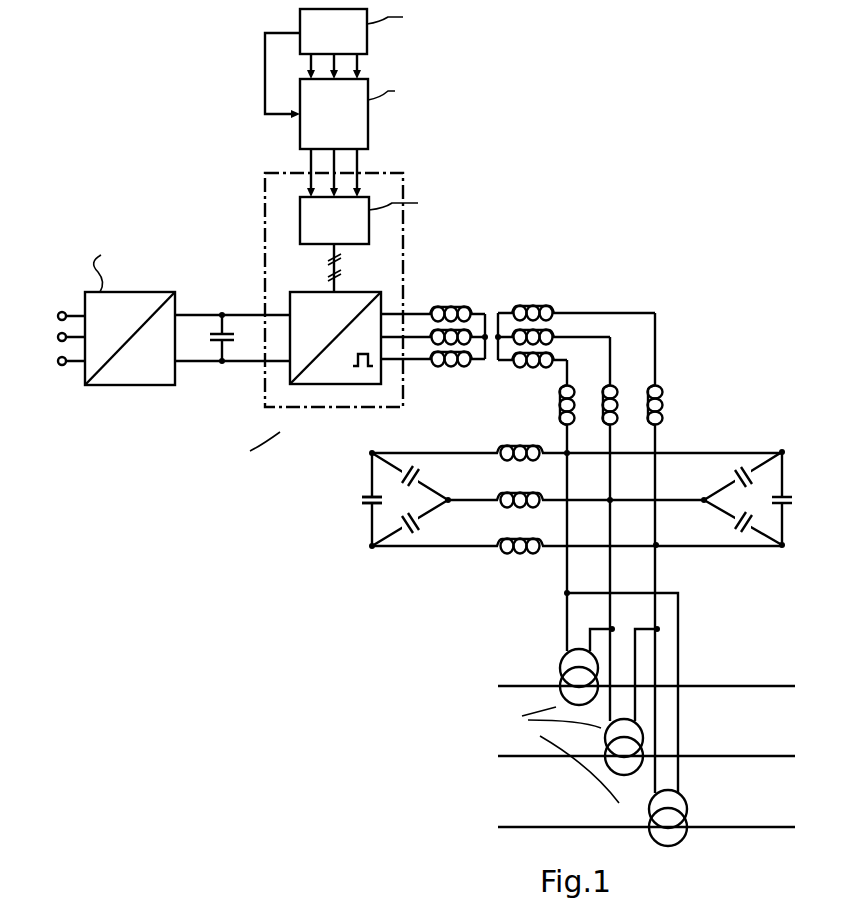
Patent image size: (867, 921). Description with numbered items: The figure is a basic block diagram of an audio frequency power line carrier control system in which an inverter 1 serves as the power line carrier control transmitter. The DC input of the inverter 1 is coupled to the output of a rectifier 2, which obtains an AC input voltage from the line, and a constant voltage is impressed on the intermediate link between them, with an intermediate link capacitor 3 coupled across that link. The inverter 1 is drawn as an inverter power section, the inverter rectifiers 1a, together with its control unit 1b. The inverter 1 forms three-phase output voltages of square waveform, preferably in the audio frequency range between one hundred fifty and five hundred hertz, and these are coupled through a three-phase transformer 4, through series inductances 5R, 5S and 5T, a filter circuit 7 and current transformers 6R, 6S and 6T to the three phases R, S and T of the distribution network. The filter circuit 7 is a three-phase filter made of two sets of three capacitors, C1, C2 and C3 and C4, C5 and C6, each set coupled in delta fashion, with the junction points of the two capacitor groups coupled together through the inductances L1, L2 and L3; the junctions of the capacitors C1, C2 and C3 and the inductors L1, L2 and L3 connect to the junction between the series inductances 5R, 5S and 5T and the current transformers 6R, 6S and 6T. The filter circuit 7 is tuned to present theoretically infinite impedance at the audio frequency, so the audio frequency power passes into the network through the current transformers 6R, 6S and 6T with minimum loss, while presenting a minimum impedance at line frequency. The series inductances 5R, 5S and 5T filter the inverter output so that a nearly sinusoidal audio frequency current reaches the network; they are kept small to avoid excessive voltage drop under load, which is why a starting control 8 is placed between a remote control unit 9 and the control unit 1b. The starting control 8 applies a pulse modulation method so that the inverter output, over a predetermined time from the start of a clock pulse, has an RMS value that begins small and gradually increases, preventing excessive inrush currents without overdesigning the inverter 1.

The remote control unit 9 is at (423, 30).
The starting control 8 is at (412, 115).
The control unit 1b is at (417, 242).
The inverter 1 is at (305, 407).
The inverter rectifiers 1a is at (322, 384).
The rectifier 2 is at (128, 385).
The intermediate link capacitor 3 is at (210, 337).
The three-phase transformer 4 is at (496, 320).
The series inductance 5R is at (575, 401).
The series inductance 5S is at (618, 401).
The series inductance 5T is at (663, 401).
The filter circuit 7 is at (471, 525).
The inductance L1 is at (523, 446).
The inductance L2 is at (523, 493).
The inductance L3 is at (523, 539).
The capacitor C1 is at (735, 481).
The capacitor C2 is at (787, 497).
The capacitor C3 is at (735, 529).
The capacitor C4 is at (419, 482).
The capacitor C5 is at (364, 508).
The capacitor C6 is at (419, 530).
The current transformer 6R is at (561, 672).
The current transformer 6S is at (606, 740).
The current transformer 6T is at (650, 810).